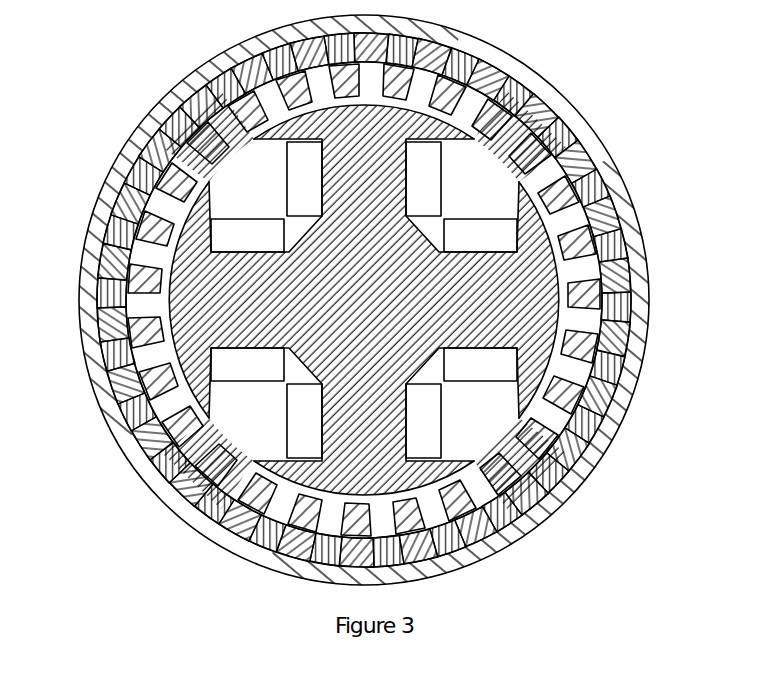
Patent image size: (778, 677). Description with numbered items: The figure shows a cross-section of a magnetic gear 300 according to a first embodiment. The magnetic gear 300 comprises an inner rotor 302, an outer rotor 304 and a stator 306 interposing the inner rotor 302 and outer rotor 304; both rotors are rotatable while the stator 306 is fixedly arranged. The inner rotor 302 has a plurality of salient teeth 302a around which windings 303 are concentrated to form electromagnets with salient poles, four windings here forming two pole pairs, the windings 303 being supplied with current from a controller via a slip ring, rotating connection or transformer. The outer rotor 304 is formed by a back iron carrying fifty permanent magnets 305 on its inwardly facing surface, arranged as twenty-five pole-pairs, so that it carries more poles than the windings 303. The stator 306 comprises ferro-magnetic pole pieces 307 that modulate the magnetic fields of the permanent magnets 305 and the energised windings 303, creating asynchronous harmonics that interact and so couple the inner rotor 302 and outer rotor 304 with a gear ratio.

The magnetic gear 300 is at (389, 297).
The inner rotor 302 is at (398, 328).
The salient teeth 302a is at (323, 170).
The windings 303 is at (478, 230).
The outer rotor 304 is at (619, 172).
The permanent magnets 305 is at (613, 248).
The stator 306 is at (508, 132).
The pole pieces 307 is at (490, 118).